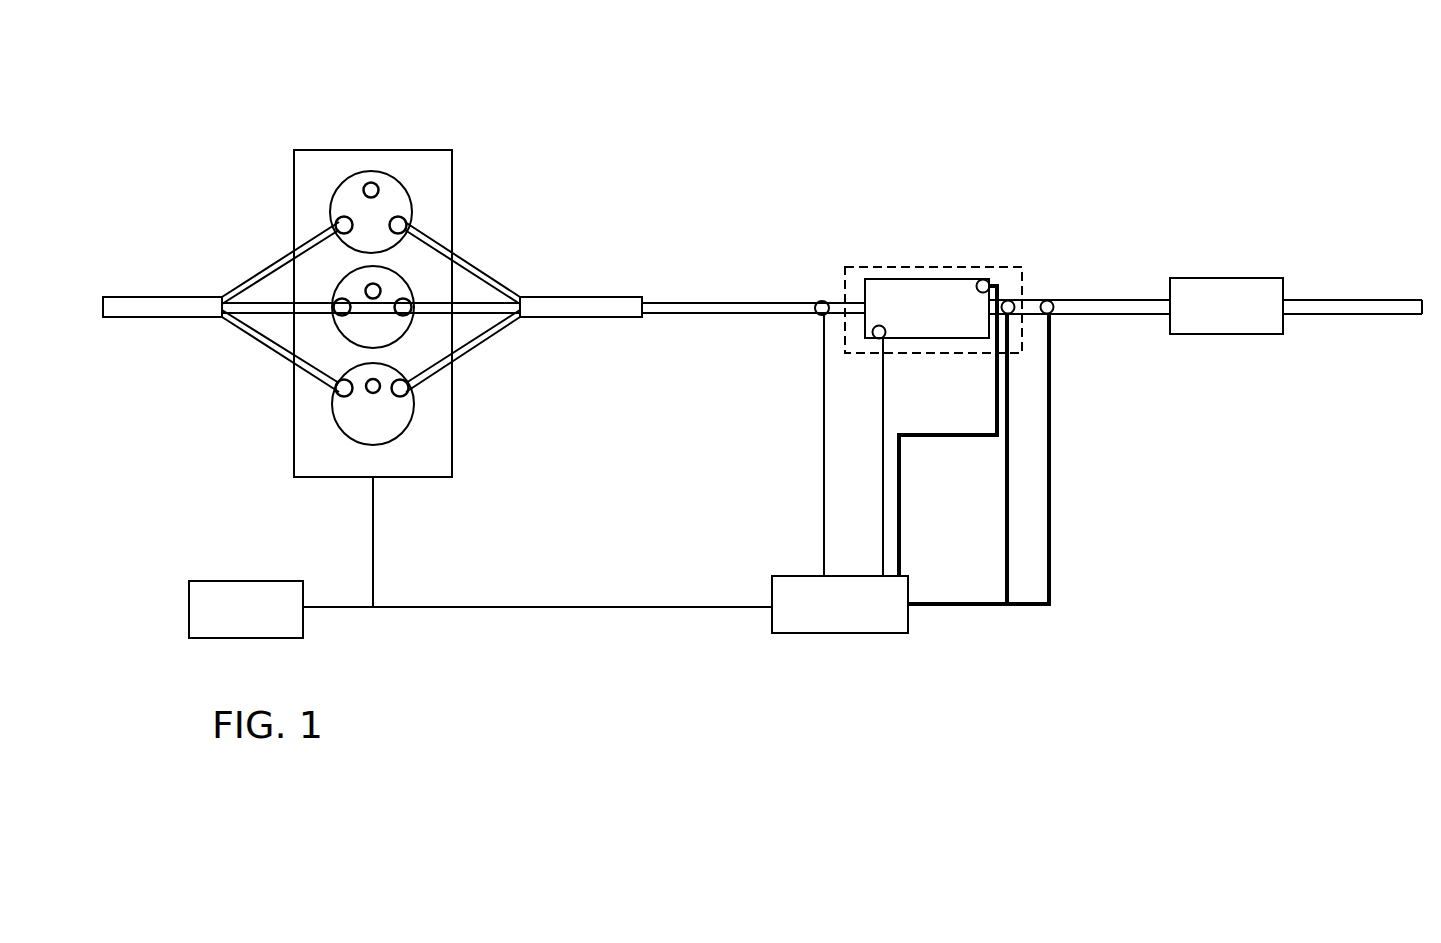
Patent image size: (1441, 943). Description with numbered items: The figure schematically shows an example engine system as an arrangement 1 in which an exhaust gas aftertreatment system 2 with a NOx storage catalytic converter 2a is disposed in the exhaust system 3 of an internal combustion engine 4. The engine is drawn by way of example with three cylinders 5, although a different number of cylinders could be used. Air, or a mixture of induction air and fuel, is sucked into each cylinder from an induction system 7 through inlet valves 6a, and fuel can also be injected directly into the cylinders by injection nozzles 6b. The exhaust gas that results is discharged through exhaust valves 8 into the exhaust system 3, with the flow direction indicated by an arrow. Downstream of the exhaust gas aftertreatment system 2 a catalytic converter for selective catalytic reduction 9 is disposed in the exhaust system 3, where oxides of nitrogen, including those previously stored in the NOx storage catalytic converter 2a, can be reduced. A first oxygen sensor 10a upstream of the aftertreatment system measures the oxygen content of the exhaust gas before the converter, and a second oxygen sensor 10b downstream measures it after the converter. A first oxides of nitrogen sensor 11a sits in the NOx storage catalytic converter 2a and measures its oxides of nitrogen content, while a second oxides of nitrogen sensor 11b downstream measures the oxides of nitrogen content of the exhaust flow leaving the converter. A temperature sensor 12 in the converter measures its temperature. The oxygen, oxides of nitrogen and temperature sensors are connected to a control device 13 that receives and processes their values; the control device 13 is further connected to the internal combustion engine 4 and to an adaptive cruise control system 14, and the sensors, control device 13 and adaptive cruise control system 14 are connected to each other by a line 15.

The arrangement 1 is at (1102, 108).
The exhaust gas aftertreatment system 2 is at (887, 267).
The NOx storage catalytic converter 2a is at (919, 288).
The exhaust system 3 is at (682, 308).
The internal combustion engine 4 is at (452, 180).
The cylinder 5 is at (355, 413).
The inlet valve 6a is at (338, 222).
The injection nozzle 6b is at (369, 184).
The induction system 7 is at (133, 308).
The exhaust valve 8 is at (413, 395).
The catalytic converter for selective catalytic reduction 9 is at (1235, 290).
The first oxygen sensor 10a is at (820, 301).
The second oxygen sensor 10b is at (1057, 298).
The first oxides of nitrogen sensor 11a is at (987, 277).
The second oxides of nitrogen sensor 11b is at (1015, 302).
The temperature sensor 12 is at (875, 338).
The control device 13 is at (813, 596).
The adaptive cruise control system 14 is at (238, 593).
The line 15 is at (1052, 582).